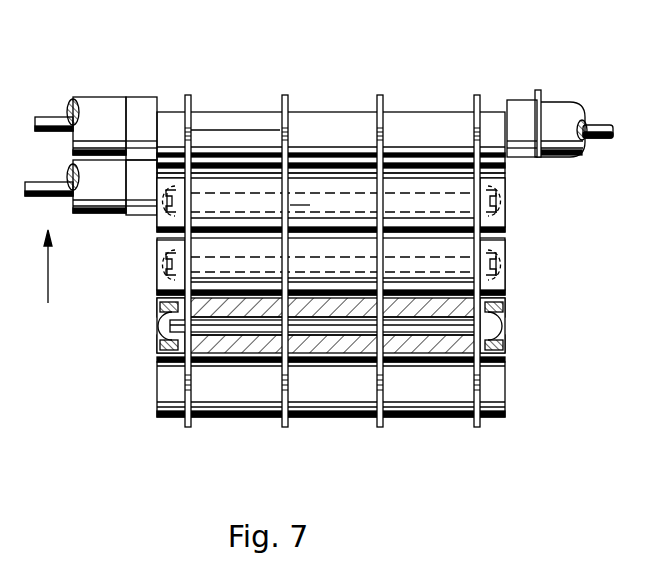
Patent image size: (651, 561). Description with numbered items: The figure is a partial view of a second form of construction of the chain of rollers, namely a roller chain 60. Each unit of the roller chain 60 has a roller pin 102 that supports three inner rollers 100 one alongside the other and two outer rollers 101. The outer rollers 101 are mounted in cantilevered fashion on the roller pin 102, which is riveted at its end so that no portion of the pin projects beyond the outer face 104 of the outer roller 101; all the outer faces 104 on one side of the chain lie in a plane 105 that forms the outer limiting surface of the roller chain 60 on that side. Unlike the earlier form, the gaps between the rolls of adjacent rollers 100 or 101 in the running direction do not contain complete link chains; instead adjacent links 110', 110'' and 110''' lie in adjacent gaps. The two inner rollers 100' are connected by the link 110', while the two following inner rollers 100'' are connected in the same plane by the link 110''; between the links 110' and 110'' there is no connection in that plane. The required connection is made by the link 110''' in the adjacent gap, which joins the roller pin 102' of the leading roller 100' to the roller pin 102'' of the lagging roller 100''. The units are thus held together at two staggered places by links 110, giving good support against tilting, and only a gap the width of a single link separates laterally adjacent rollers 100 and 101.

The roller chain 60 is at (110, 80).
The outer roller 101 is at (167, 120).
The inner roller 100 is at (331, 113).
The leading inner roller 100' is at (117, 278).
The lagging inner roller 100'' is at (236, 118).
The link 110 is at (485, 233).
The link 110' is at (142, 266).
The link 110'' is at (199, 153).
The link 110''' is at (296, 113).
The outer face 104 is at (500, 310).
The roller pin 102 is at (331, 396).
The roller pin 102' is at (331, 354).
The roller pin 102'' is at (302, 212).
The plane 105 is at (155, 423).